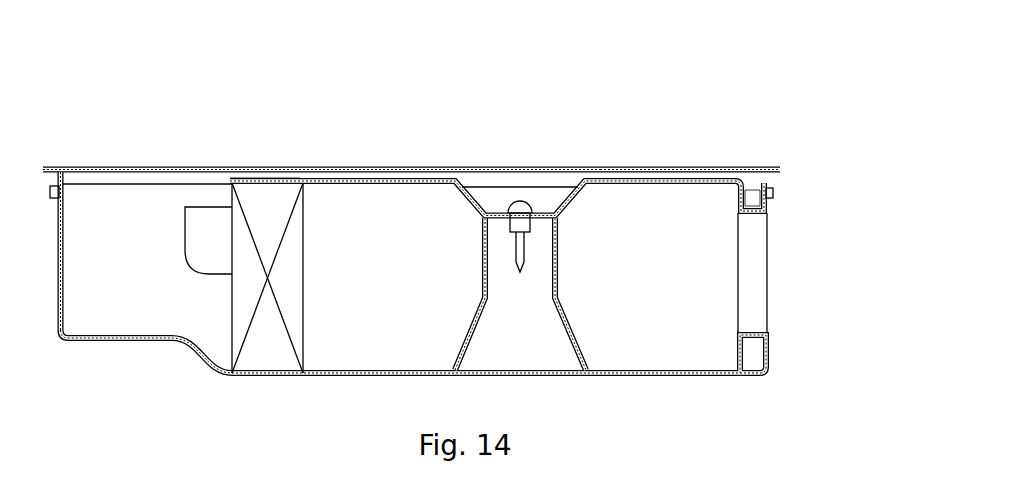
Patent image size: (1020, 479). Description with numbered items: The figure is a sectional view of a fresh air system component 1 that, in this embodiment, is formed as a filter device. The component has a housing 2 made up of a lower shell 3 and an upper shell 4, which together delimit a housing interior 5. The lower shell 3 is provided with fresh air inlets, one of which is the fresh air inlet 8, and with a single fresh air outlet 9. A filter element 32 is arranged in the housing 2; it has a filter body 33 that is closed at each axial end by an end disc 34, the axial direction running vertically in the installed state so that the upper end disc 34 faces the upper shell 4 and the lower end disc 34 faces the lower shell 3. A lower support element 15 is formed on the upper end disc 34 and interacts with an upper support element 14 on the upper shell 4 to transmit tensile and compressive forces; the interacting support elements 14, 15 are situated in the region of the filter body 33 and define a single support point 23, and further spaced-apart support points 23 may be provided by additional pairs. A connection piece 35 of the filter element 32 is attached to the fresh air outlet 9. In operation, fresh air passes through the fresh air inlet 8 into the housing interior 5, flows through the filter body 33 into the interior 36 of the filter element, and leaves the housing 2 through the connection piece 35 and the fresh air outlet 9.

The fresh air system component 1 is at (449, 218).
The housing 2 is at (193, 167).
The lower shell 3 is at (135, 341).
The upper shell 4 is at (140, 167).
The interior 5 is at (120, 271).
The fresh air inlet 8 is at (203, 246).
The fresh air outlet 9 is at (752, 268).
The upper support element 14 is at (262, 168).
The lower support element 15 is at (267, 278).
The single support point 23 is at (250, 156).
The filter element 32 is at (611, 167).
The filter body 33 is at (237, 298).
The end disc 34 is at (350, 168).
The connection piece 35 is at (752, 206).
The interior of the filter element 36 is at (391, 281).